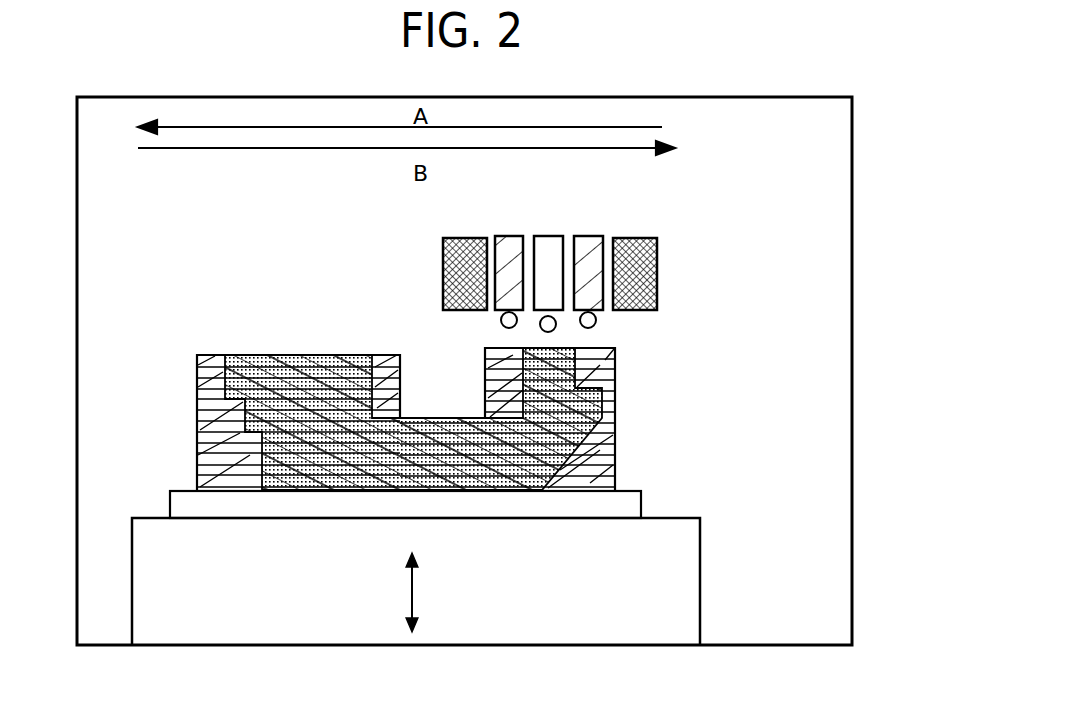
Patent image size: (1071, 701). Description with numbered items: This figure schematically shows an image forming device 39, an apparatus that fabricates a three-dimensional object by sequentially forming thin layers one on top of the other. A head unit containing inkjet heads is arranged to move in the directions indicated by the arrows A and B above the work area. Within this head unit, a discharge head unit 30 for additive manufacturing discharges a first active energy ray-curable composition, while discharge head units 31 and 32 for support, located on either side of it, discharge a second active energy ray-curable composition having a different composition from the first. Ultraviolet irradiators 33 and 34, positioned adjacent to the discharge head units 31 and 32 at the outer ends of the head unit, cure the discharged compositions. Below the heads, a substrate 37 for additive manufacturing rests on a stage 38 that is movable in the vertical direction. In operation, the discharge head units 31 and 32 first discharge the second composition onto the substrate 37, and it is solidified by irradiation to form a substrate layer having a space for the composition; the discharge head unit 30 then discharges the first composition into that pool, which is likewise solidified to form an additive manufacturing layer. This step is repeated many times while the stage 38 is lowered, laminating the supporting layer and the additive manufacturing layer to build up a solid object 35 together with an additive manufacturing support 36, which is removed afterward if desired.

The discharge head unit for additive manufacturing 30 is at (548, 234).
The discharge head unit for support 31 is at (511, 234).
The discharge head unit for support 32 is at (588, 234).
The ultraviolet irradiator 33 is at (432, 273).
The ultraviolet irradiator 34 is at (659, 273).
The solid object 35 is at (331, 342).
The additive manufacturing support 36 is at (624, 373).
The substrate for additive manufacturing 37 is at (642, 507).
The stage 38 is at (701, 570).
The image forming device 39 is at (853, 570).